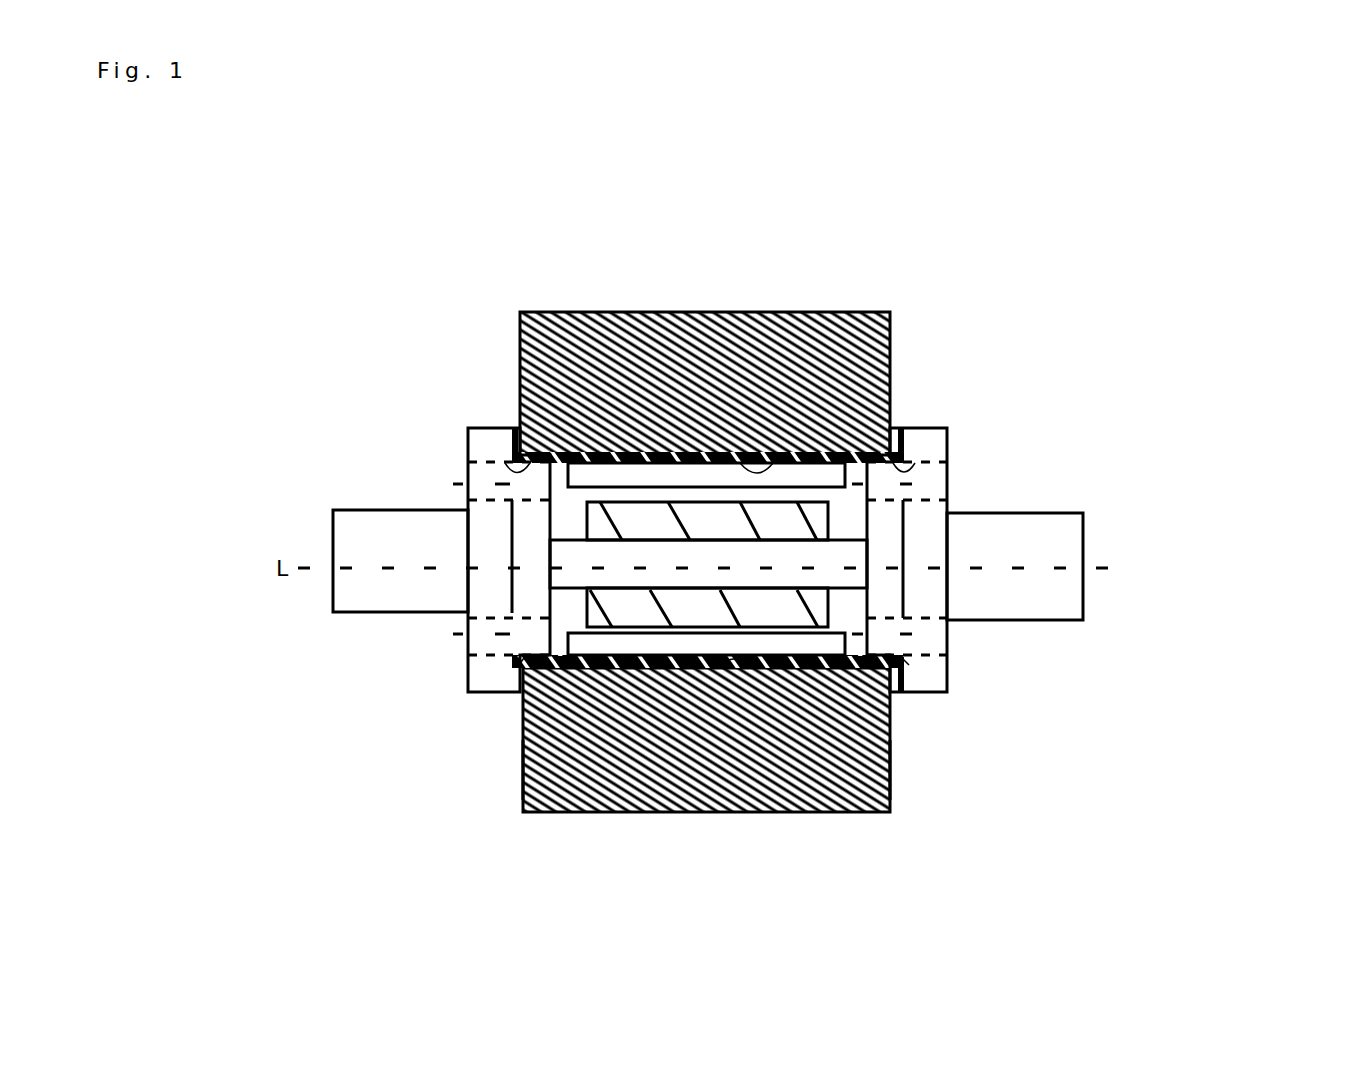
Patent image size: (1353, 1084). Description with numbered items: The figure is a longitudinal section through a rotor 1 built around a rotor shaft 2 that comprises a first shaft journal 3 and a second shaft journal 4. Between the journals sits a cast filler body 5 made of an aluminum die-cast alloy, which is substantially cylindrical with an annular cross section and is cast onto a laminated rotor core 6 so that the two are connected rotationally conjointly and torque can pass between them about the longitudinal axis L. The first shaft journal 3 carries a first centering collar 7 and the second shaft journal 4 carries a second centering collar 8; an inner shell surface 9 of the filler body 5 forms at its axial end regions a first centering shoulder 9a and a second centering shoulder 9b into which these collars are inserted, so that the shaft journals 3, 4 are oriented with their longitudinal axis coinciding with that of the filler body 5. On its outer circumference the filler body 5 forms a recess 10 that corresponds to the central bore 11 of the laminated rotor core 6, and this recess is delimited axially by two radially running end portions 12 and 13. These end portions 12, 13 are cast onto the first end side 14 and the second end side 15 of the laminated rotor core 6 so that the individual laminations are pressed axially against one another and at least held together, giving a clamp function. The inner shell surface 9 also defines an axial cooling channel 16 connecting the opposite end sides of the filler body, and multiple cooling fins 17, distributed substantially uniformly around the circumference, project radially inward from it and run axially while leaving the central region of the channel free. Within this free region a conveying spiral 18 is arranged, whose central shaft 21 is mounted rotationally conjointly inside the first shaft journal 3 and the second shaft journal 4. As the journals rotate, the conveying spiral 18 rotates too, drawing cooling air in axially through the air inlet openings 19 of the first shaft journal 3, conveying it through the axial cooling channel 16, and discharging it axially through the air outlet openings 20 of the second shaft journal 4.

The rotor 1 is at (570, 217).
The rotor shaft 2 is at (300, 494).
The first shaft journal 3 is at (433, 507).
The second shaft journal 4 is at (1000, 532).
The filler body 5 is at (795, 668).
The laminated rotor core 6 is at (890, 378).
The first centering collar 7 is at (524, 657).
The second centering collar 8 is at (905, 668).
The inner shell surface 9 is at (773, 462).
The first centering shoulder 9a is at (508, 463).
The second centering shoulder 9b is at (912, 462).
The recess 10 is at (750, 455).
The central bore 11 is at (730, 668).
The first end portion 12 is at (515, 430).
The second end portion 13 is at (915, 432).
The first end side 14 is at (522, 768).
The second end side 15 is at (893, 770).
The axial cooling channel 16 is at (580, 603).
The cooling fins 17 is at (680, 487).
The conveying spiral 18 is at (650, 605).
The air inlet openings 19 is at (486, 470).
The air outlet openings 20 is at (925, 492).
The central shaft 21 is at (835, 567).